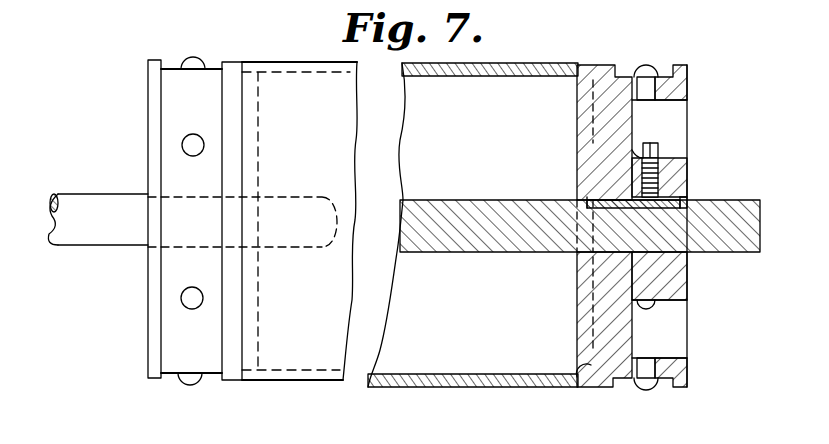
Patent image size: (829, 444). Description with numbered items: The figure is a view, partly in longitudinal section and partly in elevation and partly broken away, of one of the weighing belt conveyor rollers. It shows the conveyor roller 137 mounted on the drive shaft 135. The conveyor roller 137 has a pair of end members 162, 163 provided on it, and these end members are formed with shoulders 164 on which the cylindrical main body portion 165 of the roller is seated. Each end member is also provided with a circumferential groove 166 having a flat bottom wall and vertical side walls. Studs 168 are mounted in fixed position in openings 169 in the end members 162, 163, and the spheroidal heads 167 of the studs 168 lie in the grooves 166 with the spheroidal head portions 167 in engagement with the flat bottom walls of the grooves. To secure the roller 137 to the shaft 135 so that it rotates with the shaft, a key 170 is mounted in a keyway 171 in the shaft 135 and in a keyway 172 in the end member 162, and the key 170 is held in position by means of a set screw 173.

The drive shaft 135 is at (477, 244).
The conveyor roller 137 is at (613, 61).
The end member 162 is at (672, 182).
The end member 163 is at (148, 330).
The shoulder 164 is at (578, 367).
The cylindrical main body portion 165 is at (297, 365).
The circumferential groove 166 is at (170, 378).
The spheroidal head 167 is at (183, 62).
The stud 168 is at (665, 92).
The opening 169 is at (652, 305).
The key 170 is at (687, 187).
The keyway 171 is at (687, 200).
The keyway 172 is at (577, 200).
The set screw 173 is at (658, 152).